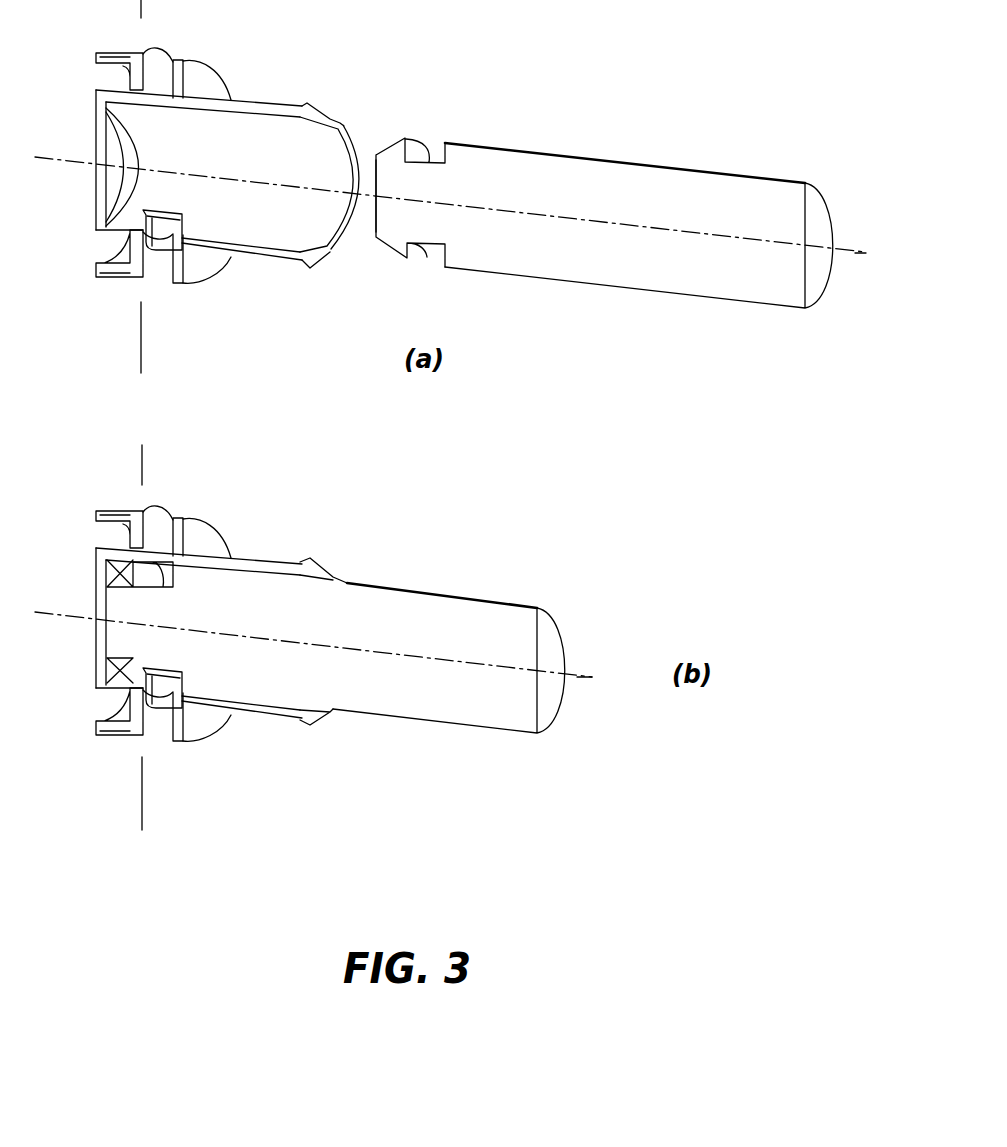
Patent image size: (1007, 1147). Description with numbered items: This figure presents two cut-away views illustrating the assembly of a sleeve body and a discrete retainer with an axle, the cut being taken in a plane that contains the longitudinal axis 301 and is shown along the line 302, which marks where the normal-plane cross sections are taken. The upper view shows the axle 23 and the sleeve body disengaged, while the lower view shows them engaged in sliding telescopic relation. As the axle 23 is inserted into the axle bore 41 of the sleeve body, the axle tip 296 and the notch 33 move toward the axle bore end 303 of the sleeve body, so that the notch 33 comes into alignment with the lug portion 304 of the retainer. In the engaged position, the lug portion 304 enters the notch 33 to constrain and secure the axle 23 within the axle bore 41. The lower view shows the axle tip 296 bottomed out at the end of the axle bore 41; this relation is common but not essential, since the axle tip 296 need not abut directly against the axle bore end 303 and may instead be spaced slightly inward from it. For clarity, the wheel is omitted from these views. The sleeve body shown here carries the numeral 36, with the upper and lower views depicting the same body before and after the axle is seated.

The axle 23 is at (417, 590).
The notch 33 is at (418, 160).
The housing 36 is at (248, 82).
The axle bore 41 is at (240, 237).
The axle tip 296 is at (376, 222).
The longitudinal axis 301 is at (860, 252).
The line 302 is at (140, 333).
The axle bore end 303 is at (110, 193).
The lug portion 304 is at (158, 697).